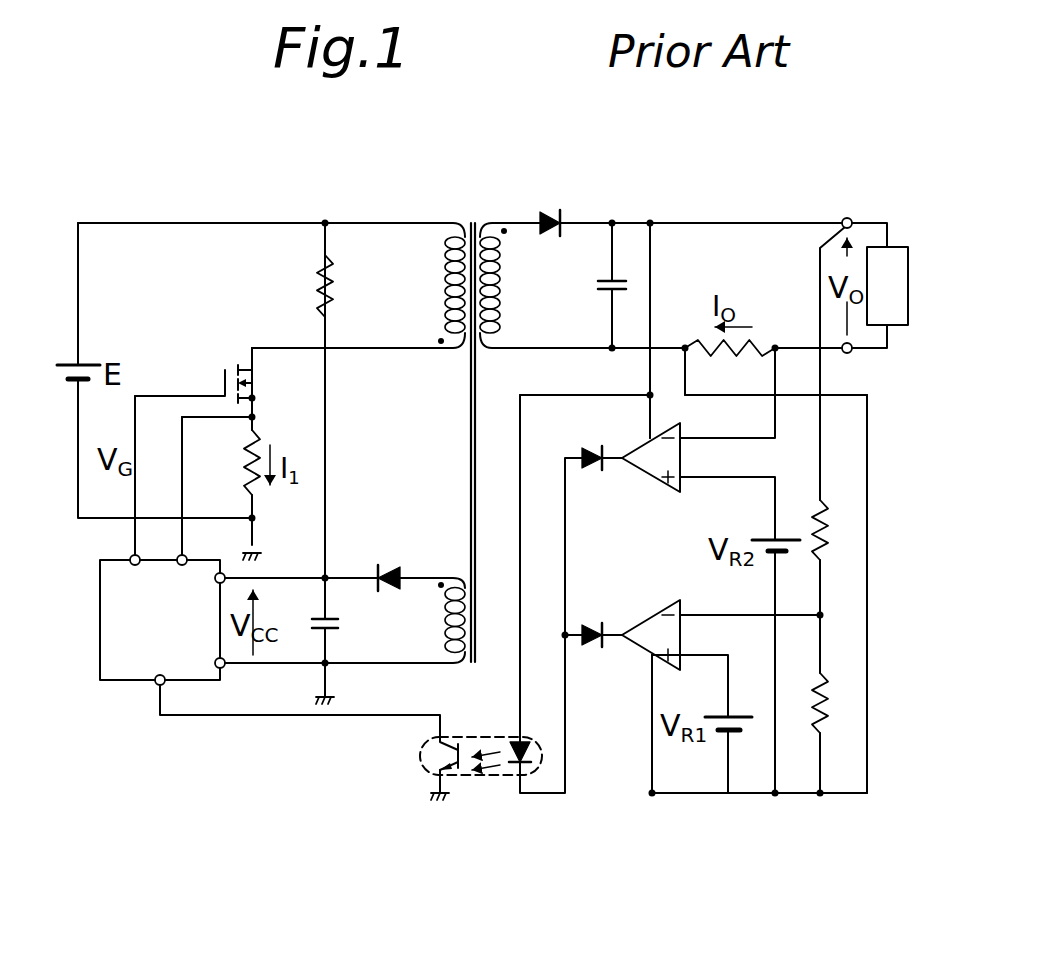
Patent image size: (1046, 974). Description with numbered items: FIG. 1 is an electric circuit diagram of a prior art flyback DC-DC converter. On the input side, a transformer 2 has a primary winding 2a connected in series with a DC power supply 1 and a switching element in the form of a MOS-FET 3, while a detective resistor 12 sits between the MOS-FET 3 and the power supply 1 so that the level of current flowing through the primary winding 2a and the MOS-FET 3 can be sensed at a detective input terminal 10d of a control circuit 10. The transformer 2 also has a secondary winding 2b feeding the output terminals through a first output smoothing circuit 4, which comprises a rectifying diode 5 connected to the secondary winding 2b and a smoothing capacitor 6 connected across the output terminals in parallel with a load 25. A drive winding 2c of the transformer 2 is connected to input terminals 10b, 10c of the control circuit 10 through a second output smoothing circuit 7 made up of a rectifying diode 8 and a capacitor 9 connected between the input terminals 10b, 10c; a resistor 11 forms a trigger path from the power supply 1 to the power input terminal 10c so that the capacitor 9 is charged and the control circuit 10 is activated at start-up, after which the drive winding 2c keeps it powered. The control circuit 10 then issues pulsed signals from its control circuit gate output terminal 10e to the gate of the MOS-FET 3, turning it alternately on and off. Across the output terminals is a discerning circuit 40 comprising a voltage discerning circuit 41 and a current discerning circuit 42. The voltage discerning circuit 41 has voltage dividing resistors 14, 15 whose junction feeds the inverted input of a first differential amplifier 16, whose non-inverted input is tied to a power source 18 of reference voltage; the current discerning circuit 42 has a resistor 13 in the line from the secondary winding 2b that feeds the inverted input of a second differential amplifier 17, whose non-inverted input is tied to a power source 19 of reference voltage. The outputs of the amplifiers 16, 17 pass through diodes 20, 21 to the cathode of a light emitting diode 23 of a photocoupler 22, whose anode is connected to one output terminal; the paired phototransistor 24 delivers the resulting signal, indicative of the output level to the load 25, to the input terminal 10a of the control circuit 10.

The DC power supply 1 is at (70, 362).
The transformer 2 is at (473, 220).
The primary winding 2a is at (448, 295).
The secondary winding 2b is at (500, 290).
The drive winding 2c is at (455, 578).
The MOS-FET 3 is at (232, 368).
The first output smoothing circuit 4 is at (596, 212).
The rectifying diode 5 is at (551, 236).
The smoothing capacitor 6 is at (614, 280).
The second output smoothing circuit 7 is at (355, 556).
The rectifying diode 8 is at (388, 594).
The capacitor 9 is at (313, 620).
The control circuit 10 is at (127, 684).
The input terminal 10a is at (165, 684).
The input terminal 10b is at (215, 662).
The power input terminal 10c is at (218, 582).
The detective input terminal 10d is at (180, 564).
The control circuit gate output terminal 10e is at (130, 556).
The resistor 11 is at (318, 282).
The detective resistor 12 is at (245, 470).
The resistor 13 is at (730, 352).
The voltage dividing resistor 14 is at (825, 505).
The voltage dividing resistor 15 is at (823, 675).
The first differential amplifier 16 is at (648, 608).
The second differential amplifier 17 is at (648, 480).
The power source of reference voltage 18 is at (735, 715).
The power source of reference voltage 19 is at (790, 538).
The diode 20 is at (592, 648).
The diode 21 is at (590, 448).
The photocoupler 22 is at (482, 778).
The light emitting diode 23 is at (512, 742).
The phototransistor 24 is at (420, 757).
The load 25 is at (897, 246).
The discerning circuit 40 is at (742, 808).
The voltage discerning circuit 41 is at (628, 717).
The current discerning circuit 42 is at (665, 505).